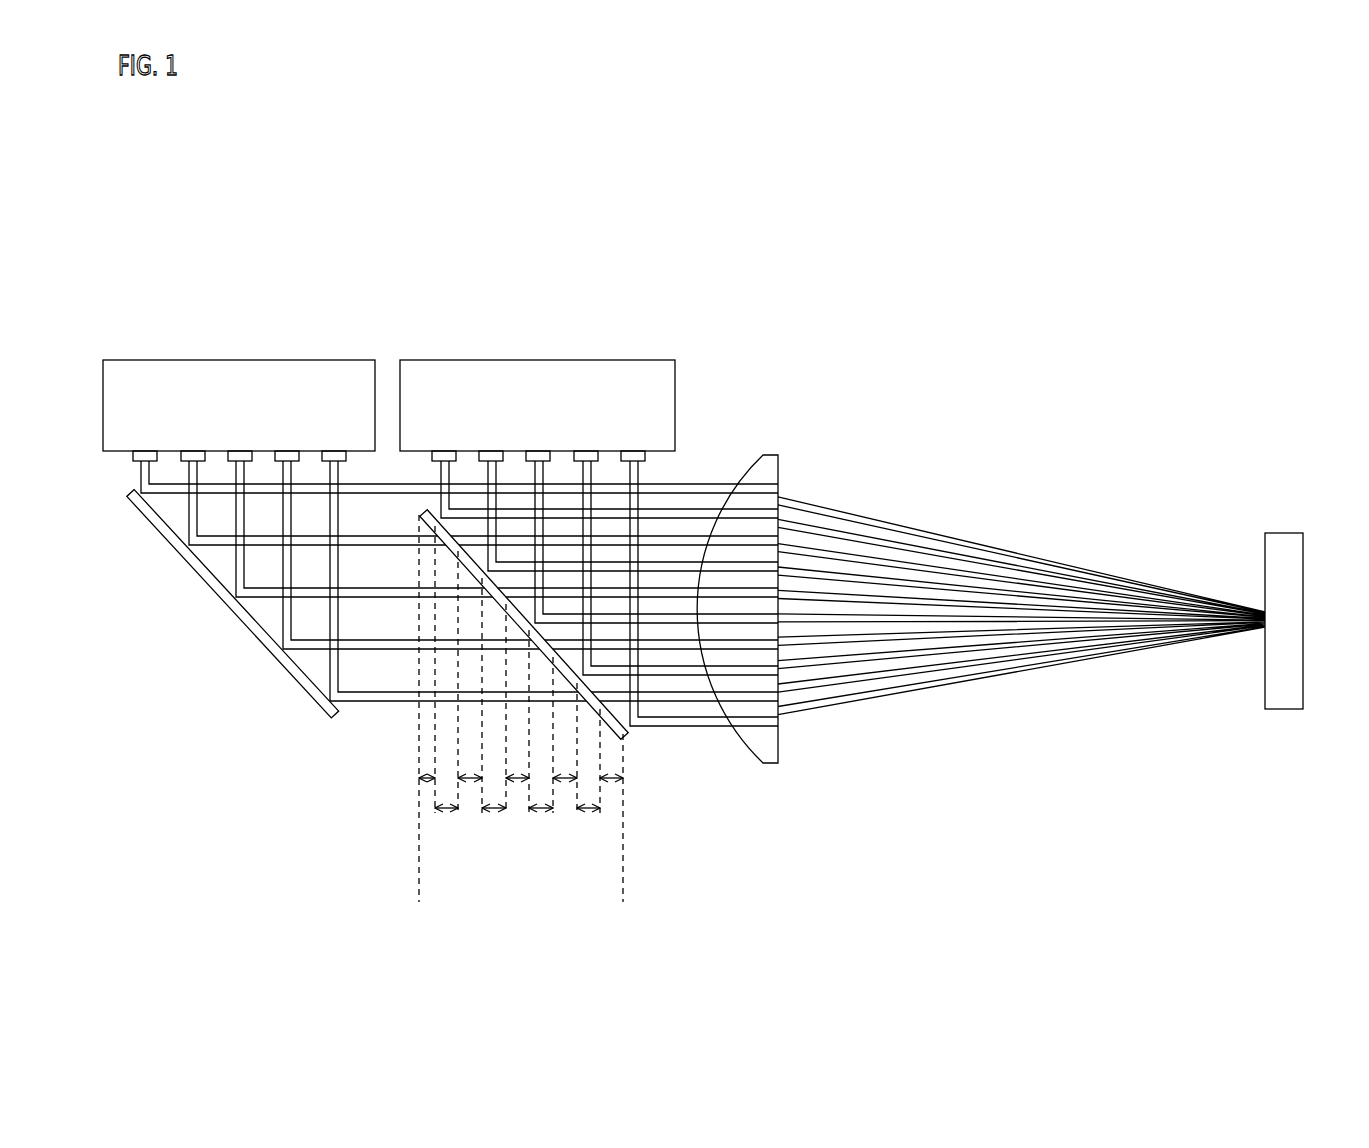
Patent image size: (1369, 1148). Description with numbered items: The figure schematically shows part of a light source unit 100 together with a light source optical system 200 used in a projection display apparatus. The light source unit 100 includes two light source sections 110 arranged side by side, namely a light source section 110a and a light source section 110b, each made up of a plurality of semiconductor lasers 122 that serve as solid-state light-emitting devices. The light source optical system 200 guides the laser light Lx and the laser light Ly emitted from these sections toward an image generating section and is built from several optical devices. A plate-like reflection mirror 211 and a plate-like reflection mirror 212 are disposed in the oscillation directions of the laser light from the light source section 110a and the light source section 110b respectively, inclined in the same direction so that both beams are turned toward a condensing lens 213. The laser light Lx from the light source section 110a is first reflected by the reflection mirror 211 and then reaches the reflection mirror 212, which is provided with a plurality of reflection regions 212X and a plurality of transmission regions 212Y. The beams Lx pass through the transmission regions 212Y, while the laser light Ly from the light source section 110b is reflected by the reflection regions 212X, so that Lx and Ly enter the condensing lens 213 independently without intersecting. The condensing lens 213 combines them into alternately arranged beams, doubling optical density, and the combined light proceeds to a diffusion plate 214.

The light source unit 100 is at (757, 358).
The light source section 110 is at (563, 224).
The light source section (second light source section) 110a is at (237, 375).
The light source section (first light source section) 110b is at (537, 377).
The semiconductor laser 122 is at (333, 451).
The light source optical system 200 is at (202, 667).
The reflection mirror (second reflection device) 211 is at (308, 687).
The reflection mirror (first reflection device) 212 is at (623, 904).
The reflection region 212X is at (520, 747).
The transmission region 212Y is at (517, 839).
The condensing lens 213 is at (768, 755).
The diffusion plate 214 is at (1285, 700).
The laser light Lx is at (370, 703).
The laser light Ly is at (682, 728).